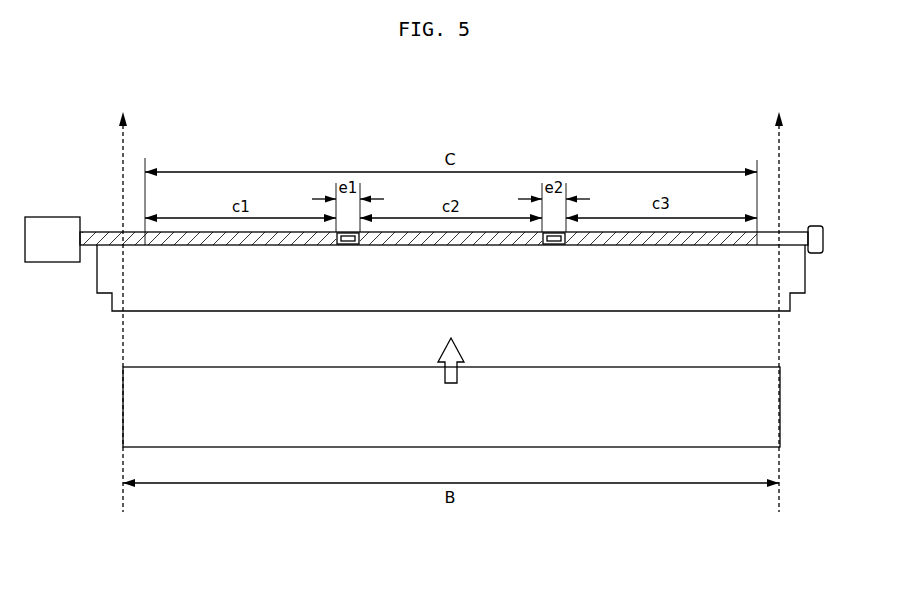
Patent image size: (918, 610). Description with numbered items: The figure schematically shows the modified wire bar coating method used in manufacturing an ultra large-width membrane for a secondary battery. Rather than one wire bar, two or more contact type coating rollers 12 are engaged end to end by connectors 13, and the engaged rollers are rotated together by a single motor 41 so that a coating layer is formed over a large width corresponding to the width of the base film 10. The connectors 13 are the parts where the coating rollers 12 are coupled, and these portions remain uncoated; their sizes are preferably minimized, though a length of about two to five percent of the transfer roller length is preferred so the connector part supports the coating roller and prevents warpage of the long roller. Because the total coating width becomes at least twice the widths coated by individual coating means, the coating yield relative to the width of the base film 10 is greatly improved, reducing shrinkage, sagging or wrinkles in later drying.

The base film 10 is at (763, 410).
The coating roller 12 is at (283, 232).
The connector 13 is at (350, 247).
The motor 41 is at (50, 217).